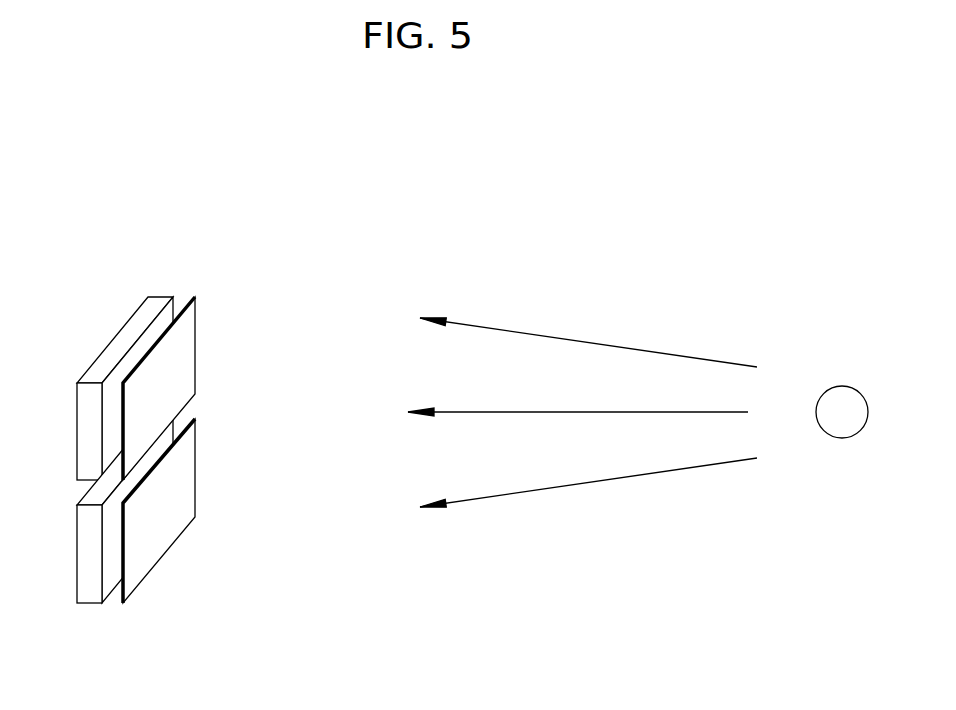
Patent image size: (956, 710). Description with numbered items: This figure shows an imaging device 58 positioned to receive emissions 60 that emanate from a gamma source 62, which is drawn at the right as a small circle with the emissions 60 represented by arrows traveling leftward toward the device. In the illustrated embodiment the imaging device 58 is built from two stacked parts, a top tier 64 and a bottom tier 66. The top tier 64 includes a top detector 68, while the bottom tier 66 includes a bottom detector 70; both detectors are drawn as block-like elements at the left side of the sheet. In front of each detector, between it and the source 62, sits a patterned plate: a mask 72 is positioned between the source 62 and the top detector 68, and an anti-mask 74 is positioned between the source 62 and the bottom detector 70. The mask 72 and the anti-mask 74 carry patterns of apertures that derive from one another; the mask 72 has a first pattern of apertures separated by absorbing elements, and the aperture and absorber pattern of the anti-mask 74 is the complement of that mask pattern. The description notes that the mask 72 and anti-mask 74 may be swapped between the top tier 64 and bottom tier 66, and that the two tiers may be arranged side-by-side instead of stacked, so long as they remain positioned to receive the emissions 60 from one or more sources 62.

The imaging device 58 is at (313, 245).
The emissions 60 is at (580, 340).
The gamma source 62 is at (853, 386).
The top tier 64 is at (193, 459).
The bottom tier 66 is at (208, 472).
The top detector 68 is at (77, 400).
The bottom detector 70 is at (77, 579).
The mask 72 is at (193, 327).
The anti-mask 74 is at (173, 547).